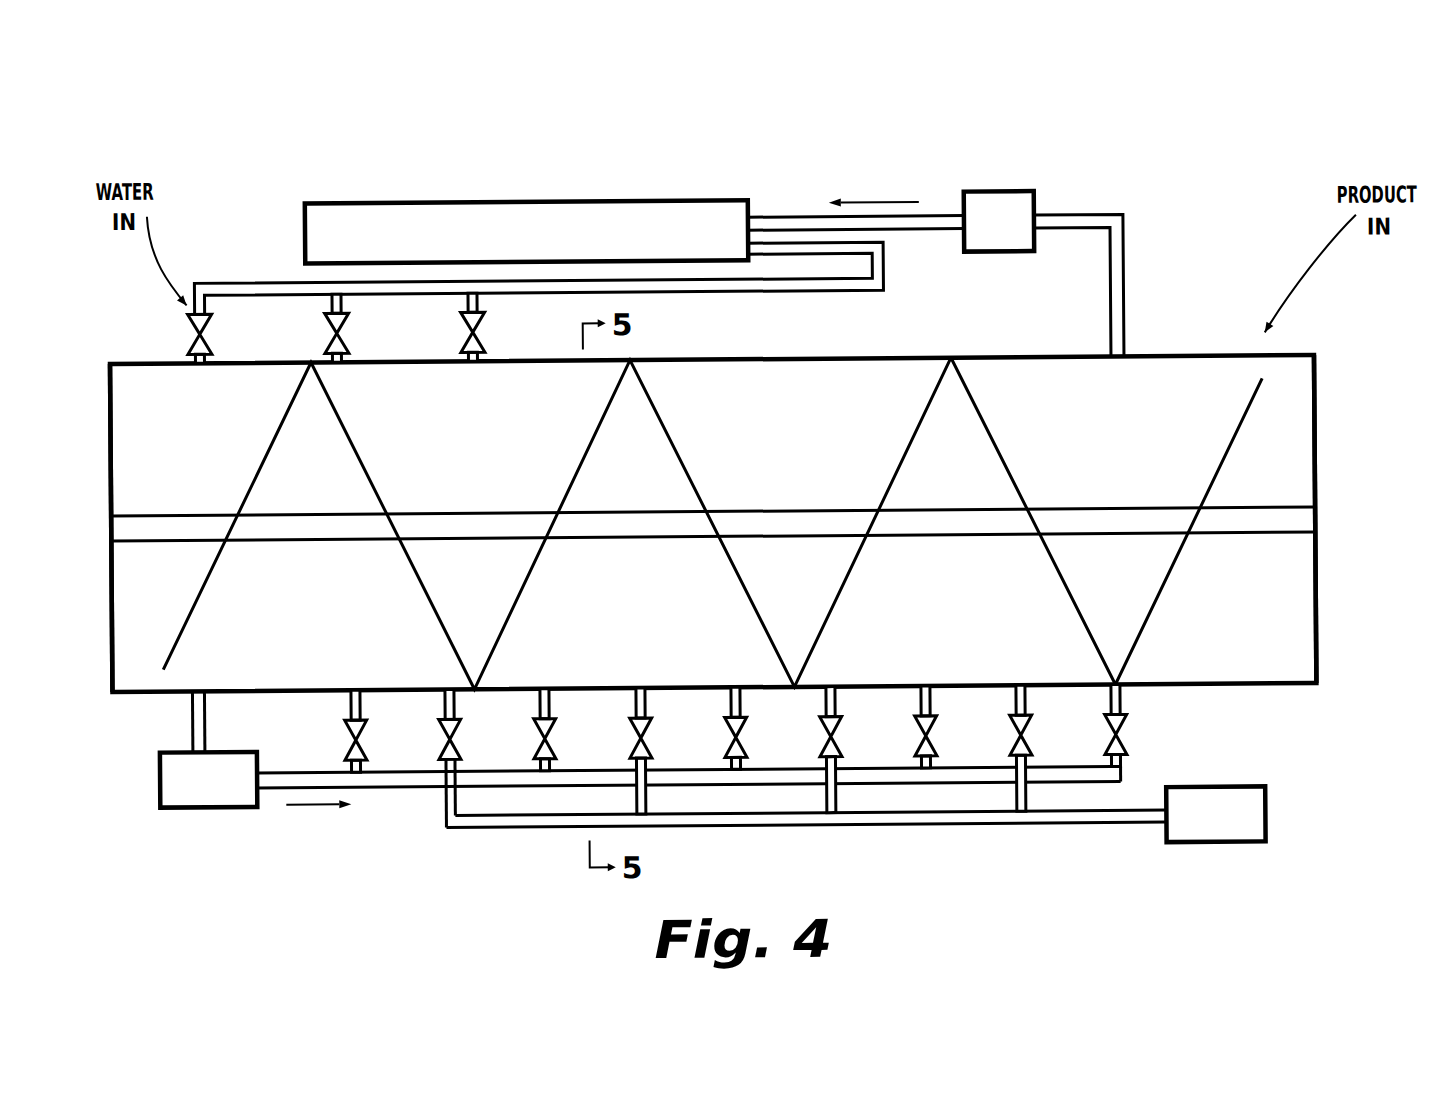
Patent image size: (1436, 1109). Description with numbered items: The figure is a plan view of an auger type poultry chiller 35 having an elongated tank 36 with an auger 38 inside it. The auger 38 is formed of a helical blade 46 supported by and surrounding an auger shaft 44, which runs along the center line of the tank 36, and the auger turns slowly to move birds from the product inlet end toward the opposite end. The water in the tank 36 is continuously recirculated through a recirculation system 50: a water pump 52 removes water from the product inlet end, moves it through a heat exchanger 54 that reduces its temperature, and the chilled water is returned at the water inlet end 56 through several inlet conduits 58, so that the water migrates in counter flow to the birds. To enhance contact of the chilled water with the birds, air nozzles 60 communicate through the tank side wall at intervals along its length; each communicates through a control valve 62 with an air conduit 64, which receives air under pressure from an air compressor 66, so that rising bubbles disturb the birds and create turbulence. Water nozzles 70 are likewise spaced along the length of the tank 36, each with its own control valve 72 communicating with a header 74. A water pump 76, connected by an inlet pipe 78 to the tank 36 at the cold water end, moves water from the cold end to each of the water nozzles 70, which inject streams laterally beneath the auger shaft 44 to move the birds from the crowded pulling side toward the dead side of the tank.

The auger type poultry chiller 35 is at (1175, 183).
The elongated tank 36 is at (1296, 471).
The auger 38 is at (667, 434).
The auger shaft 44 is at (789, 516).
The helical blade 46 is at (985, 435).
The recirculation system 50 is at (1131, 270).
The water pump 52 is at (1010, 198).
The heat exchanger 54 is at (655, 205).
The water inlet end 56 is at (143, 392).
The inlet conduits 58 is at (330, 306).
The air nozzles 60 is at (453, 706).
The control valves 62 is at (458, 742).
The air conduit 64 is at (915, 832).
The air compressor 66 is at (1235, 850).
The water nozzles 70 is at (357, 706).
The control valve 72 is at (364, 742).
The header 74 is at (405, 790).
The water pump 76 is at (178, 808).
The inlet pipe 78 is at (190, 715).